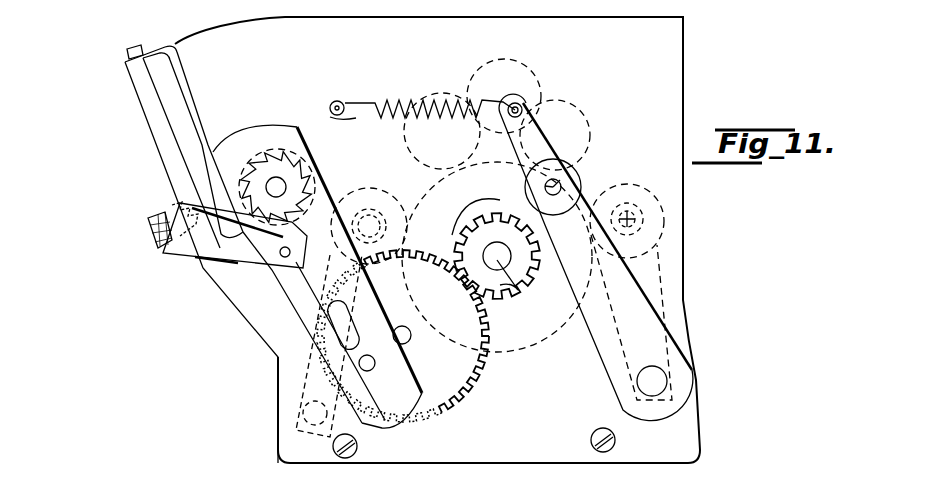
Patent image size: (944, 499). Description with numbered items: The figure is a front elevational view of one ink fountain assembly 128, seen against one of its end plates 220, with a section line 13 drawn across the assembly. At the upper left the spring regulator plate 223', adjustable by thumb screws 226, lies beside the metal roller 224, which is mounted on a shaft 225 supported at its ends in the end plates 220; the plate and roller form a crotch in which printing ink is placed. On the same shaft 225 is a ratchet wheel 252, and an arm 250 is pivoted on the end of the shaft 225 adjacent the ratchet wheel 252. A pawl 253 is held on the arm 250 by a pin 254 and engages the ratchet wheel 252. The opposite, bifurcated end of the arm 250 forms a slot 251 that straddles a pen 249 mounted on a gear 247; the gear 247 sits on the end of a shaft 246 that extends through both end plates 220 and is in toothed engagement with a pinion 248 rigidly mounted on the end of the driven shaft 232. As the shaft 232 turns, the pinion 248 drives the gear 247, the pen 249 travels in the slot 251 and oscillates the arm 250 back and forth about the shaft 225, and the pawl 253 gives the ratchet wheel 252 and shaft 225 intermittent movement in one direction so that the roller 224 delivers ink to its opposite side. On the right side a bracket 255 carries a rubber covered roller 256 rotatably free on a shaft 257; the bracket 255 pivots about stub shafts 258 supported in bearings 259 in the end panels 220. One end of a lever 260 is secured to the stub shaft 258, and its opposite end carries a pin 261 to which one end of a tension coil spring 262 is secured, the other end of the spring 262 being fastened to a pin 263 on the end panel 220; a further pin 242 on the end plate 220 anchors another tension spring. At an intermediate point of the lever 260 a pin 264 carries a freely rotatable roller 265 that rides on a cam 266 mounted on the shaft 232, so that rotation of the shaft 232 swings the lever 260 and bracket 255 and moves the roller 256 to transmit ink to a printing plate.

The ink fountain assembly 128 is at (712, 58).
The section line 13 is at (216, 66).
The end plate 220 is at (660, 107).
The spring regulator plate 223' is at (160, 141).
The metal roller 224 is at (245, 137).
The shaft 225 is at (272, 187).
The thumb screws 226 is at (148, 223).
The shaft 232 is at (508, 283).
The pin 242 is at (474, 463).
The shaft 246 is at (407, 325).
The gear 247 is at (452, 372).
The pinion 248 is at (508, 270).
The pen 249 is at (375, 361).
The arm 250 is at (262, 320).
The slot 251 is at (342, 333).
The ratchet wheel 252 is at (305, 163).
The pawl 253 is at (205, 237).
The pin 254 is at (227, 277).
The bracket 255 is at (655, 278).
The rubber covered roller 256 is at (663, 220).
The shaft 257 is at (650, 197).
The stub shafts 258 is at (650, 384).
The bearings 259 is at (660, 374).
The lever 260 is at (640, 307).
The pin 261 is at (527, 104).
The tension coil spring 262 is at (413, 97).
The pin 263 is at (340, 98).
The pin 264 is at (560, 187).
The roller 265 is at (587, 187).
The cam 266 is at (507, 207).